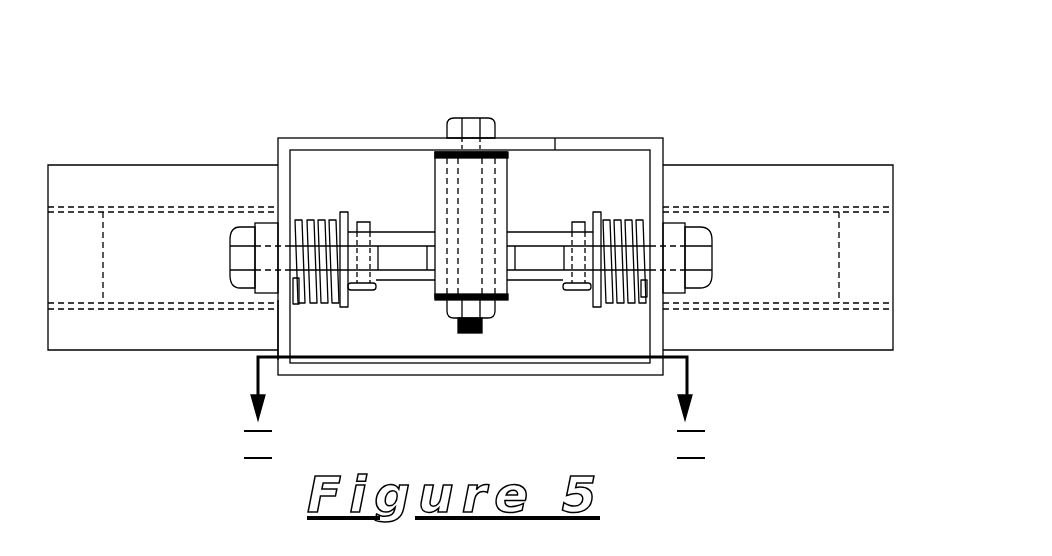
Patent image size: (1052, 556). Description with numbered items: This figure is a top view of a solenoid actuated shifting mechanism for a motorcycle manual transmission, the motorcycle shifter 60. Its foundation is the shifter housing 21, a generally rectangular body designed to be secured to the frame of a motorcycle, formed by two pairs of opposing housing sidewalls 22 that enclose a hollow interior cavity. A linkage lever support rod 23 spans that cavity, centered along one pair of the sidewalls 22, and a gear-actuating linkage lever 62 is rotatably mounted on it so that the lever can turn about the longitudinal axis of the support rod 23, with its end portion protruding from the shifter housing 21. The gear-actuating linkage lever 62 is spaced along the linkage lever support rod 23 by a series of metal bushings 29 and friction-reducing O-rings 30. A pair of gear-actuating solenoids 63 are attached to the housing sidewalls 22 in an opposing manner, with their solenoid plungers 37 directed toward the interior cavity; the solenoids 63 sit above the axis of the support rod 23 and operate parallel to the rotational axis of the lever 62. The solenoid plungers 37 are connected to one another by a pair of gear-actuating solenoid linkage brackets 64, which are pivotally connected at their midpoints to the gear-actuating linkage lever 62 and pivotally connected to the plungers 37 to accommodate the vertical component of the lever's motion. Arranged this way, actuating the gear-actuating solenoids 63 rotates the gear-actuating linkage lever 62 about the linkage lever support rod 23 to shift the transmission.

The motorcycle shifter 60 is at (470, 235).
The gear-actuating solenoid 63 is at (165, 330).
The housing sidewall 22 is at (590, 138).
The shifter housing 21 is at (277, 315).
The solenoid plunger 37 is at (278, 148).
The gear-actuating solenoid linkage bracket 64 is at (403, 240).
The gear-actuating linkage lever 62 is at (485, 260).
The metal bushing 29 is at (458, 287).
The O-ring 30 is at (508, 155).
The linkage lever support rod 23 is at (461, 333).